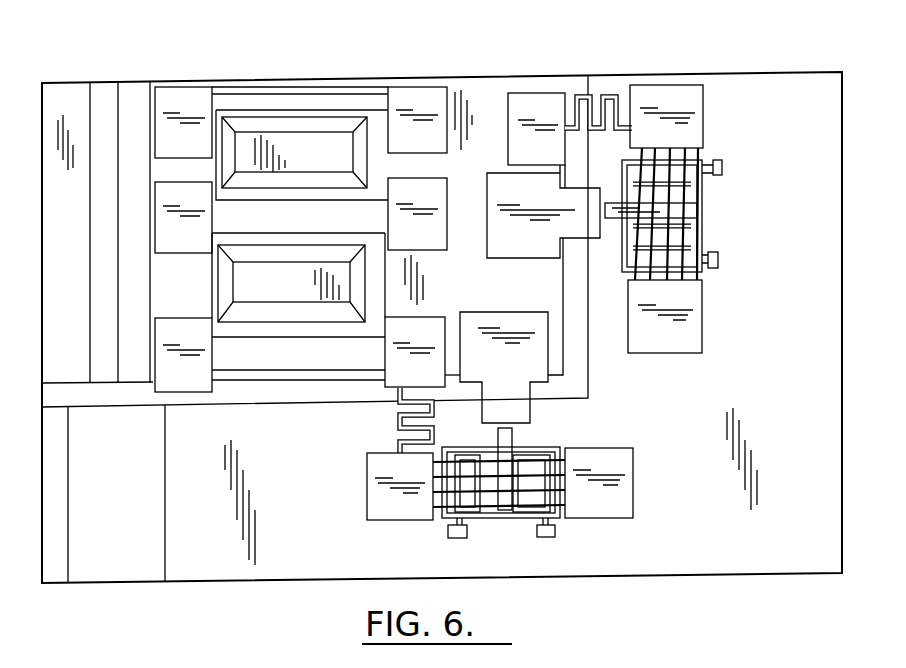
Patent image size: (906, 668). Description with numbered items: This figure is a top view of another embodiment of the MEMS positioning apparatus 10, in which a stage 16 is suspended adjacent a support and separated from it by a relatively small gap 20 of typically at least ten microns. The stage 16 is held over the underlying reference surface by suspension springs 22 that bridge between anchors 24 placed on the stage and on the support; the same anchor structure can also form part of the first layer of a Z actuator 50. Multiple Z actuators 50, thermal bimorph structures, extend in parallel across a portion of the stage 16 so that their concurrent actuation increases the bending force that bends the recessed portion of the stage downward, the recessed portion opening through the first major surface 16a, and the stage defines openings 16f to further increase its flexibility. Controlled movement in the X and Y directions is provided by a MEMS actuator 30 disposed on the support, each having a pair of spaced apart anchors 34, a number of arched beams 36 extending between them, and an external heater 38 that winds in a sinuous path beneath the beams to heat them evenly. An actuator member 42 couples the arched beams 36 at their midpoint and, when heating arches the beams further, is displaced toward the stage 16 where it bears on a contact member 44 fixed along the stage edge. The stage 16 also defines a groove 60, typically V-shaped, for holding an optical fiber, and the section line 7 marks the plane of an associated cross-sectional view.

The MEMS positioning apparatus 10 is at (471, 45).
The section line 7- 7 is at (42, 218).
The stage 16 is at (508, 86).
The first major surface 16a is at (492, 298).
The openings 16f is at (310, 146).
The gap 20 is at (58, 393).
The suspension springs 22 is at (603, 96).
The anchors 24 is at (556, 92).
The MEMS actuator 30 is at (574, 301).
The anchors 34 is at (690, 88).
The arched beams 36 is at (720, 260).
The external heater 38 is at (702, 232).
The actuator member 42 is at (680, 208).
The contact member 44 is at (497, 187).
The Z actuator 50 is at (313, 238).
The groove 60 is at (102, 97).